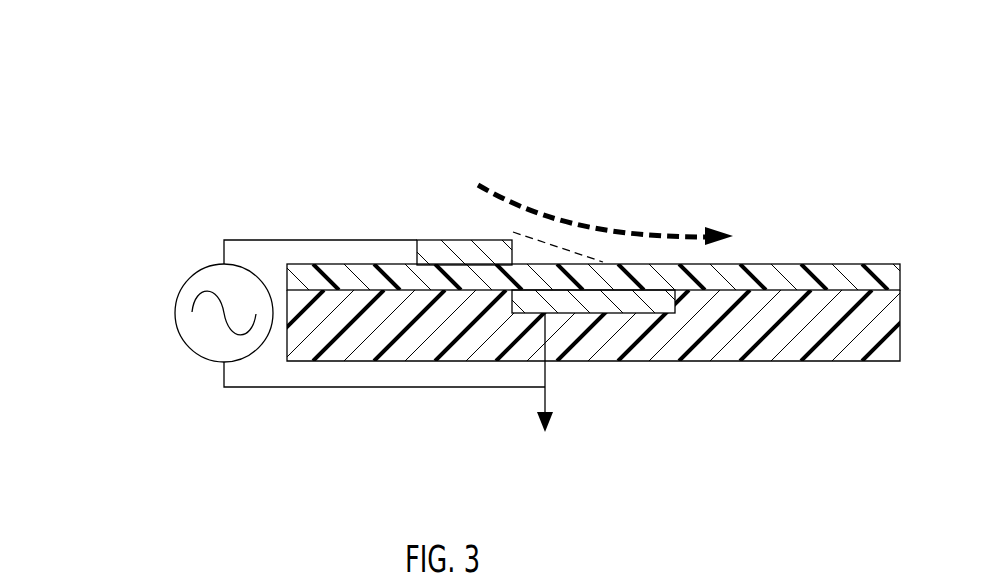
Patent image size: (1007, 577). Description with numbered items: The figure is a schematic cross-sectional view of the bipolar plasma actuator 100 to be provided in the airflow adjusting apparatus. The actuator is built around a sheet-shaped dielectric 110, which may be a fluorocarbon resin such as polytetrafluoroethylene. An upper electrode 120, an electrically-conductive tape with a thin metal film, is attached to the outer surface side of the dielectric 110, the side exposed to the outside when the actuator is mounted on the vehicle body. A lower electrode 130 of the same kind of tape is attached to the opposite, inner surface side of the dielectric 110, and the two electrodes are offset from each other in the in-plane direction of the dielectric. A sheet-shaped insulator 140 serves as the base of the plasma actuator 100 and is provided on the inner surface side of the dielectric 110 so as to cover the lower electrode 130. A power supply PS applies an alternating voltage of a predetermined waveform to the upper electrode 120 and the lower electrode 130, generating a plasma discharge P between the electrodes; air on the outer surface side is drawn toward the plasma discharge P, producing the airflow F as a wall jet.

The bipolar plasma actuator 100 is at (352, 130).
The dielectric 110 is at (793, 263).
The upper electrode 120 is at (458, 240).
The lower electrode 130 is at (617, 308).
The insulator 140 is at (740, 358).
The power supply PS is at (189, 281).
The plasma discharge P is at (553, 226).
The airflow F is at (655, 236).